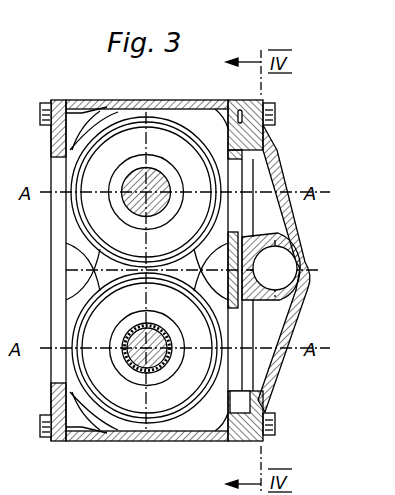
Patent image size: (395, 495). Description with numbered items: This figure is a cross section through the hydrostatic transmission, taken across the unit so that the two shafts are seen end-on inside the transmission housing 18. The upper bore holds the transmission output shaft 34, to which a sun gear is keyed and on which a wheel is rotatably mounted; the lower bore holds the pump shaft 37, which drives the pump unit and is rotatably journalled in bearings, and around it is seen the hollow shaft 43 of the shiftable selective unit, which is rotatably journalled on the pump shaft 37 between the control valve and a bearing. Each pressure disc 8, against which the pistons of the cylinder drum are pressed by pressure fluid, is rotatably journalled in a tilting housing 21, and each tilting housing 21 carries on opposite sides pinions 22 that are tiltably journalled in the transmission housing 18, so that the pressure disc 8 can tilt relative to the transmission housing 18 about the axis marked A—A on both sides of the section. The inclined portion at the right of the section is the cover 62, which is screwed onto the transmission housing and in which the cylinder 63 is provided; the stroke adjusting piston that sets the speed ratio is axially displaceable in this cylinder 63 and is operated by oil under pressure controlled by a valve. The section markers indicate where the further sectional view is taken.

The pressure disc 8 is at (182, 237).
The transmission housing 18 is at (152, 103).
The tilting housing 21 is at (92, 130).
The pinion 22 is at (54, 170).
The transmission output shaft 34 is at (122, 178).
The pump shaft 37 is at (156, 362).
The hollow shaft 43 is at (134, 368).
The cover 62 is at (280, 352).
The cylinder 63 is at (282, 257).